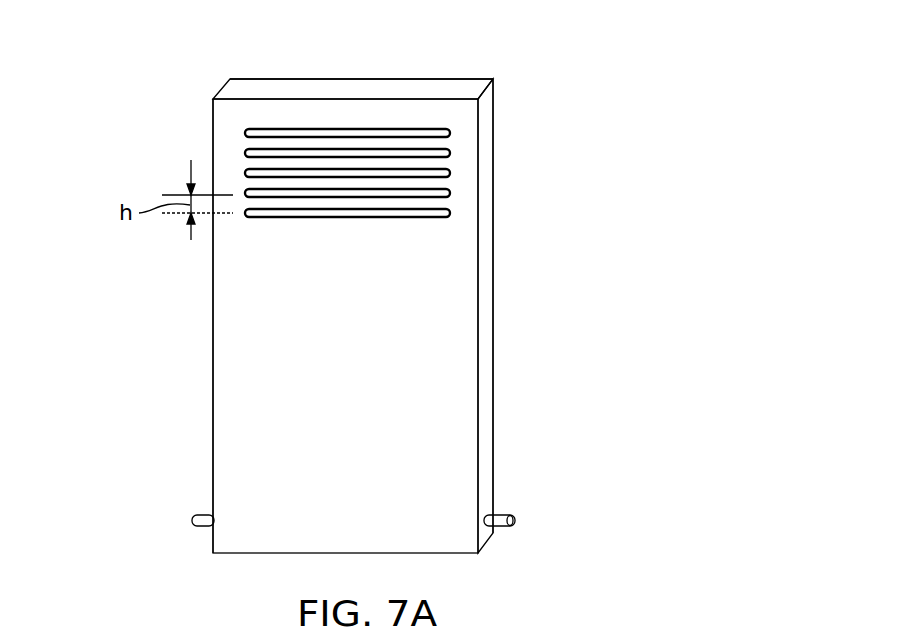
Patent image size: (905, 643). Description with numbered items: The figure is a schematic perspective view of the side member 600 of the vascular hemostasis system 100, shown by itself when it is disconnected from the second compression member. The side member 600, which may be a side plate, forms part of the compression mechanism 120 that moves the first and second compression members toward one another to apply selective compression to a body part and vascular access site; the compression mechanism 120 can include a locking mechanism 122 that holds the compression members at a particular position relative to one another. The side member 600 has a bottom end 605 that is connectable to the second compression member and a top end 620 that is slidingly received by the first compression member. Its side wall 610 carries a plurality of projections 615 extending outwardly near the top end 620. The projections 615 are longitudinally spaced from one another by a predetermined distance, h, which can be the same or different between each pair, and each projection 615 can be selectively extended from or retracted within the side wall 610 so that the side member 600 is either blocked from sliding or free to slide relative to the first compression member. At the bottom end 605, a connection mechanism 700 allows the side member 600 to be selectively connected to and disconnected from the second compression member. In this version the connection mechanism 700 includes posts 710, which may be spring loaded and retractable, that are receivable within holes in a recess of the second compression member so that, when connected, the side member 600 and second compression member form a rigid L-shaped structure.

The vascular hemostasis system 100 is at (585, 61).
The compression mechanism 120 is at (155, 156).
The locking mechanism 122 is at (554, 165).
The side member 600 is at (462, 310).
The bottom end 605 is at (524, 507).
The side wall 610 is at (232, 387).
The projections 615 is at (452, 213).
The top end 620 is at (203, 124).
The connection mechanism 700 is at (156, 486).
The posts 710 is at (198, 527).